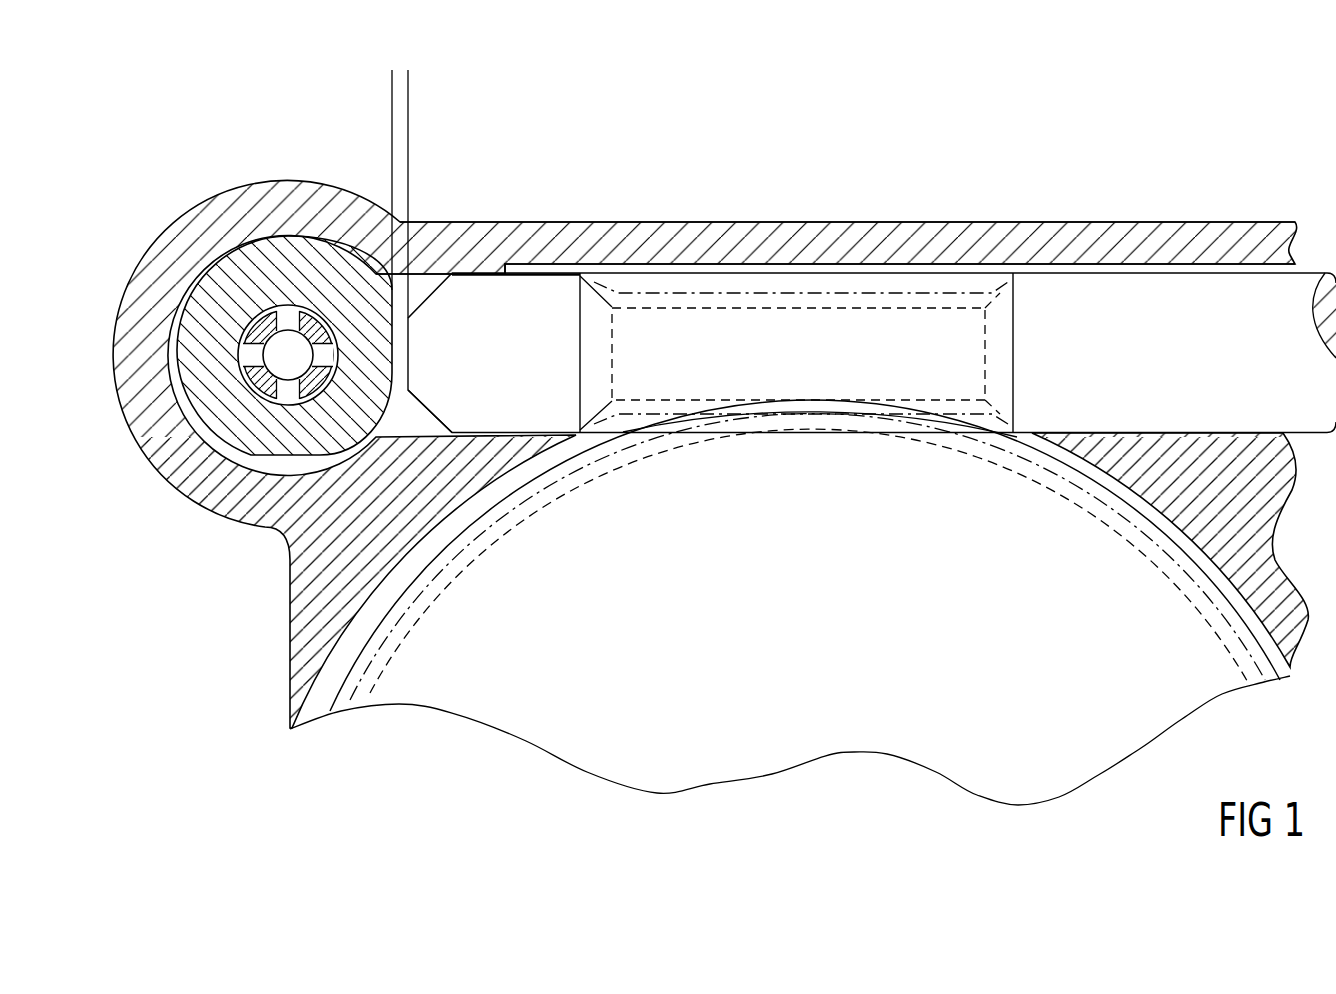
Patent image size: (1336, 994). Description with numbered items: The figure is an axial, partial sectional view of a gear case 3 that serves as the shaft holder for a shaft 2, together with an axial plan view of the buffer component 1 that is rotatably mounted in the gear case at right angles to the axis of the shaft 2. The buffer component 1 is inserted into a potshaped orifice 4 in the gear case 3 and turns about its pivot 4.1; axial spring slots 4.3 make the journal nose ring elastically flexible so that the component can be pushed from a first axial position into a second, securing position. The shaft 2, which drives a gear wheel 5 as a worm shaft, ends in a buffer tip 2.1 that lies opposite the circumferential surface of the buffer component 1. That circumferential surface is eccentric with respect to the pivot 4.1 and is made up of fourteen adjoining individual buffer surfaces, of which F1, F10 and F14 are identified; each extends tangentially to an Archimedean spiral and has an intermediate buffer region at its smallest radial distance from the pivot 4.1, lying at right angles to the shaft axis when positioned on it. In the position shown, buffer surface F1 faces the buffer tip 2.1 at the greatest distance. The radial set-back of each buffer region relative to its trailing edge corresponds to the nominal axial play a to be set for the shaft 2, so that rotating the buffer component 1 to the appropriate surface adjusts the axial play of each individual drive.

The buffer component 1 is at (290, 277).
The shaft 2 is at (543, 338).
The buffer tip 2.1 is at (432, 313).
The gear case 3 is at (523, 250).
The potshaped orifice 4 is at (200, 438).
The pivot 4.1 is at (247, 337).
The axial spring slots 4.3 is at (288, 390).
The gear wheel 5 is at (655, 629).
The individual buffer surface F1 is at (395, 348).
The individual buffer surface F10 is at (240, 330).
The individual buffer surface F14 is at (393, 230).
The nominal axial play a is at (460, 78).